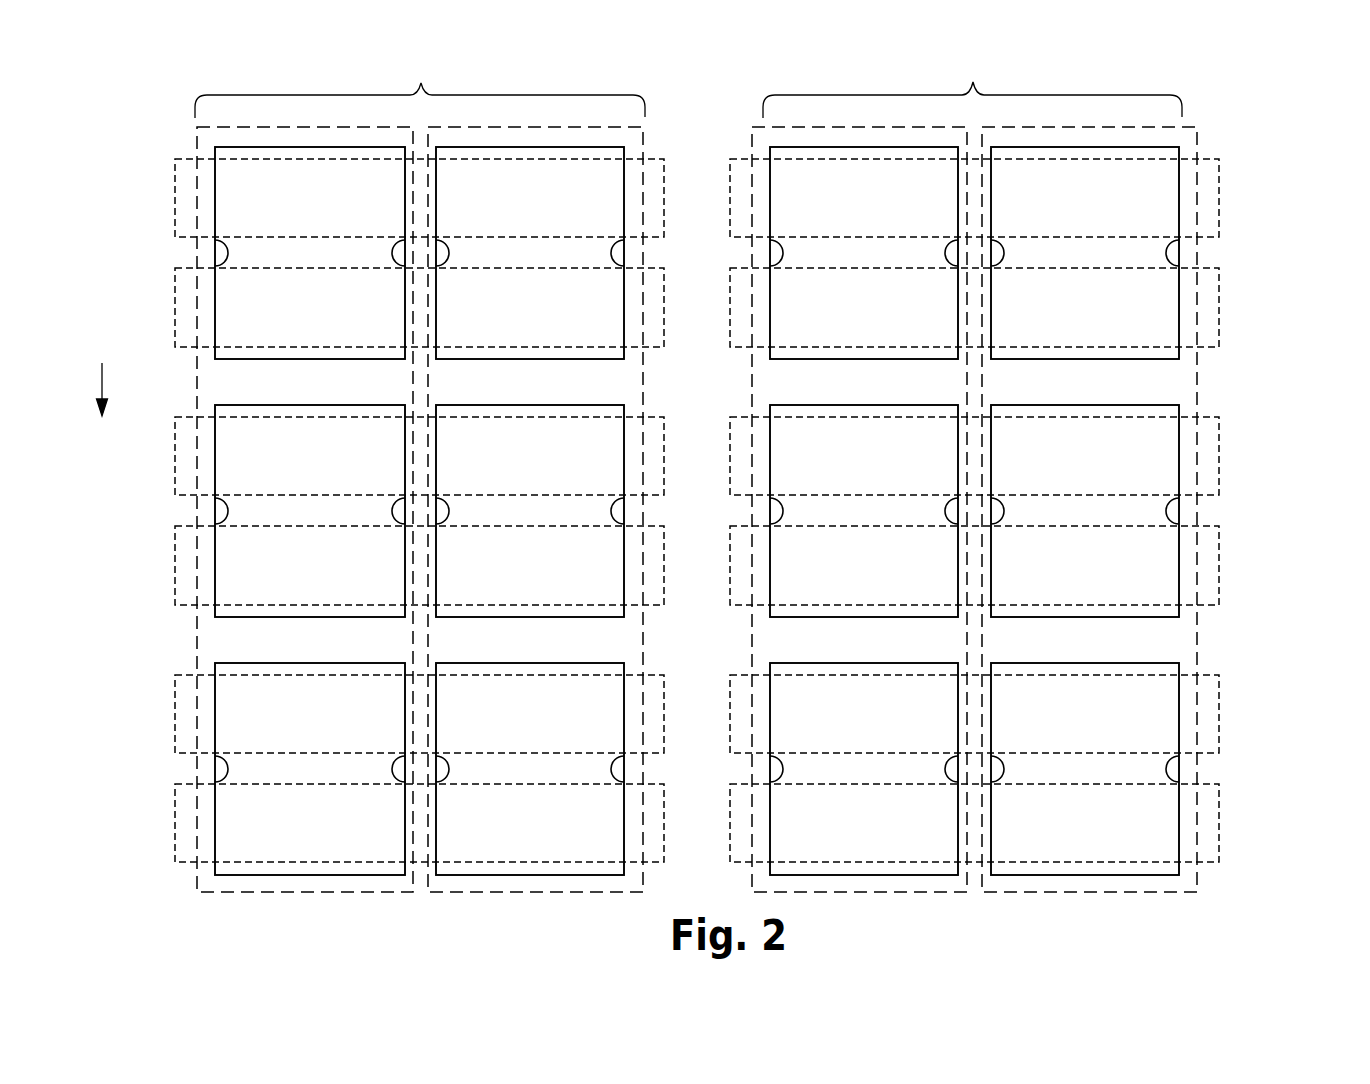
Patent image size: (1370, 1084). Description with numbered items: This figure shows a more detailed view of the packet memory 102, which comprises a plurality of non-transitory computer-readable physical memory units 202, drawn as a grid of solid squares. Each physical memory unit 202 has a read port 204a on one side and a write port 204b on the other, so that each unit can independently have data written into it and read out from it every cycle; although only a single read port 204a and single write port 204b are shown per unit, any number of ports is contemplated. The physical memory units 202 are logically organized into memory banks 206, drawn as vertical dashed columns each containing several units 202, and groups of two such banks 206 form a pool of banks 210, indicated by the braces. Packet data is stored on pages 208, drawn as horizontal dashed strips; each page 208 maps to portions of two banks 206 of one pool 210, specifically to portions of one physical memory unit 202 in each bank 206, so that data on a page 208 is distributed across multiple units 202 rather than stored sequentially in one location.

The packet memory 102 is at (1270, 60).
The physical memory unit 202 is at (882, 265).
The read port 204a is at (783, 243).
The write port 204b is at (943, 263).
The memory bank 206 is at (195, 132).
The page 208 is at (173, 198).
The pool of banks 210 is at (688, 86).